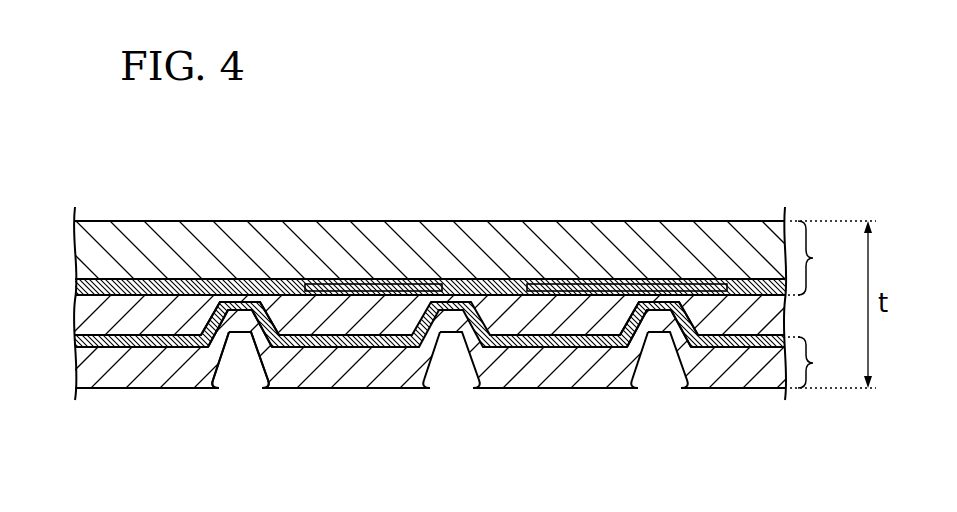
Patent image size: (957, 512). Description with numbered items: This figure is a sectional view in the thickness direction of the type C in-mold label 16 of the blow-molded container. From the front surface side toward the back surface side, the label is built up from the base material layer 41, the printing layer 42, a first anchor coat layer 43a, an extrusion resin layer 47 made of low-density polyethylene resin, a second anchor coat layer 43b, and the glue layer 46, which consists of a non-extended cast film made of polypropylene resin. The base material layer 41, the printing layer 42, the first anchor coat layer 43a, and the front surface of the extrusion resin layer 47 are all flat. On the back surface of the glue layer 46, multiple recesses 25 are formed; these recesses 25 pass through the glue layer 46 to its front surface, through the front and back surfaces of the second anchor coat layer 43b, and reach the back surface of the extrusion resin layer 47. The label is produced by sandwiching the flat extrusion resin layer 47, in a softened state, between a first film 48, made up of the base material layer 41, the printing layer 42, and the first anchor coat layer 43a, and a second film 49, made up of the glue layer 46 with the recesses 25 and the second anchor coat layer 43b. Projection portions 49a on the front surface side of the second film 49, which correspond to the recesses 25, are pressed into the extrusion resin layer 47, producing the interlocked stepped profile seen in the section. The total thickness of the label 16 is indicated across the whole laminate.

The in-mold label 16 is at (775, 197).
The base material layer 41 is at (582, 230).
The printing layer 42 is at (390, 284).
The first anchor coat layer 43a is at (168, 282).
The second anchor coat layer 43b is at (352, 348).
The glue layer 46 is at (560, 378).
The extrusion resin layer 47 is at (493, 302).
The first film 48 is at (816, 258).
The second film 49 is at (816, 362).
The projection portions 49a is at (241, 307).
The recesses 25 is at (240, 336).